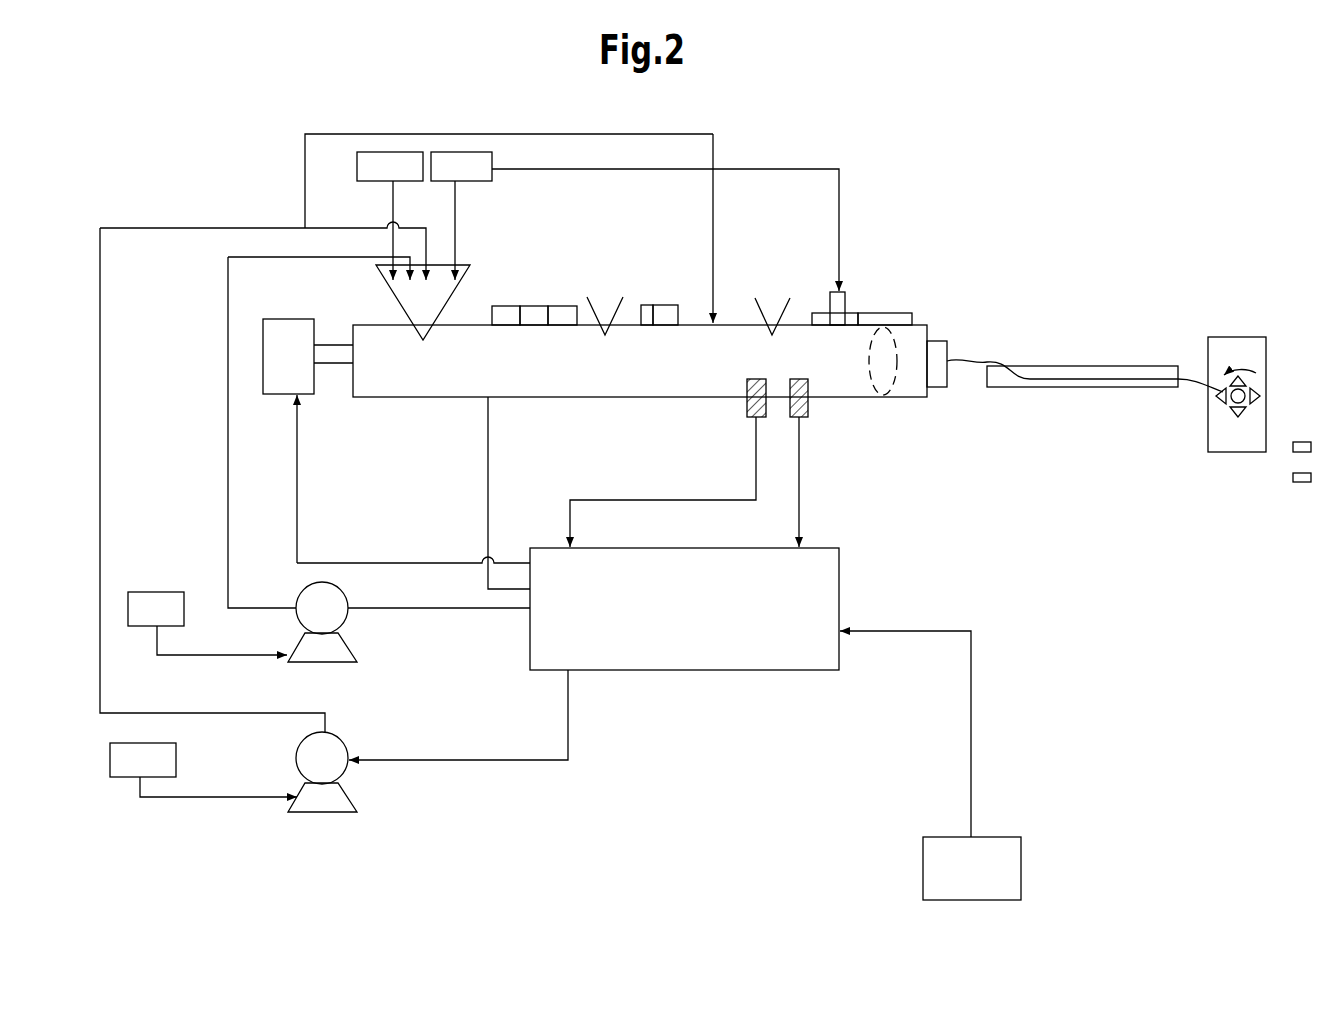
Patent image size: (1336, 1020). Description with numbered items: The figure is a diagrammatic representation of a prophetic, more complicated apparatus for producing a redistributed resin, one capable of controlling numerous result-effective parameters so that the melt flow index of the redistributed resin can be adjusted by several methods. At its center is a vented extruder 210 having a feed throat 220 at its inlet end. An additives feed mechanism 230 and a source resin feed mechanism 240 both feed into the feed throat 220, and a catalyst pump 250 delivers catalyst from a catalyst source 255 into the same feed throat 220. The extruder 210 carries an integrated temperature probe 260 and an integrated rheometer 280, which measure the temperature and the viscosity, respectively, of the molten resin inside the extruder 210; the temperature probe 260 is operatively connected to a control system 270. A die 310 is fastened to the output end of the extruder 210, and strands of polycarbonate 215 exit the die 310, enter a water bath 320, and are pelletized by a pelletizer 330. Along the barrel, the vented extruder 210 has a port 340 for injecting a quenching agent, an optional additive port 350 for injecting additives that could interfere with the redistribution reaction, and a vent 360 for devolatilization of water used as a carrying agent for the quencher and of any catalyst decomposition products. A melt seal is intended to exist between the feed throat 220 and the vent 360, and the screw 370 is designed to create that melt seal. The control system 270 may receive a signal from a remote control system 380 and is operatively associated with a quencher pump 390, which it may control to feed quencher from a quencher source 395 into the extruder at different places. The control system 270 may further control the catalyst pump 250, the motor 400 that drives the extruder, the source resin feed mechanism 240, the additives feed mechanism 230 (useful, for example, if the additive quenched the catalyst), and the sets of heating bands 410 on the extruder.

The vented extruder 210 is at (390, 397).
The strands of polycarbonate 215 is at (970, 360).
The feed throat 220 is at (470, 300).
The additives feed mechanism 230 is at (635, 221).
The source resin feed mechanism 240 is at (390, 216).
The catalyst pump 250 is at (357, 652).
The catalyst source 255 is at (207, 623).
The temperature probe 260 is at (747, 410).
The control system 270 is at (684, 609).
The rheometer 280 is at (808, 410).
The die 310 is at (940, 340).
The water bath 320 is at (1065, 365).
The pelletizer 330 is at (1233, 337).
The port 340 is at (712, 318).
The additive port 350 is at (845, 292).
The vent 360 is at (597, 300).
The screw 370 is at (332, 345).
The remote control system 380 is at (972, 868).
The quencher pump 390 is at (357, 796).
The quencher source 395 is at (203, 770).
The motor 400 is at (287, 318).
The heating bands 410 is at (538, 306).